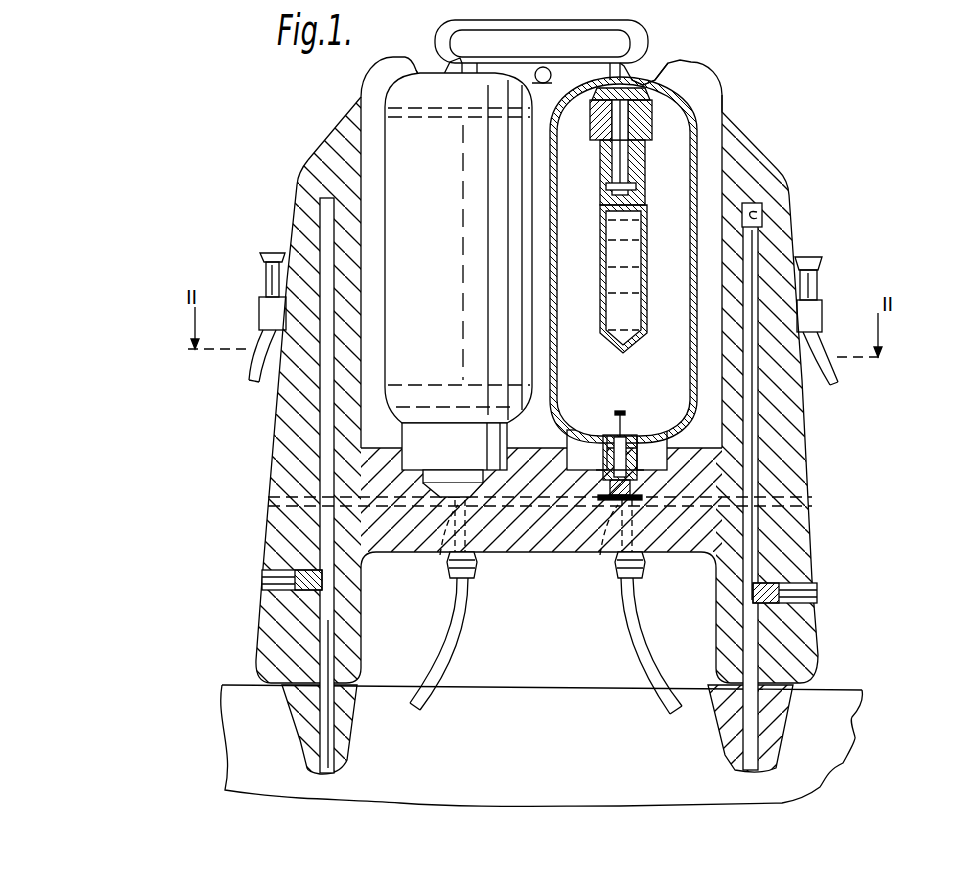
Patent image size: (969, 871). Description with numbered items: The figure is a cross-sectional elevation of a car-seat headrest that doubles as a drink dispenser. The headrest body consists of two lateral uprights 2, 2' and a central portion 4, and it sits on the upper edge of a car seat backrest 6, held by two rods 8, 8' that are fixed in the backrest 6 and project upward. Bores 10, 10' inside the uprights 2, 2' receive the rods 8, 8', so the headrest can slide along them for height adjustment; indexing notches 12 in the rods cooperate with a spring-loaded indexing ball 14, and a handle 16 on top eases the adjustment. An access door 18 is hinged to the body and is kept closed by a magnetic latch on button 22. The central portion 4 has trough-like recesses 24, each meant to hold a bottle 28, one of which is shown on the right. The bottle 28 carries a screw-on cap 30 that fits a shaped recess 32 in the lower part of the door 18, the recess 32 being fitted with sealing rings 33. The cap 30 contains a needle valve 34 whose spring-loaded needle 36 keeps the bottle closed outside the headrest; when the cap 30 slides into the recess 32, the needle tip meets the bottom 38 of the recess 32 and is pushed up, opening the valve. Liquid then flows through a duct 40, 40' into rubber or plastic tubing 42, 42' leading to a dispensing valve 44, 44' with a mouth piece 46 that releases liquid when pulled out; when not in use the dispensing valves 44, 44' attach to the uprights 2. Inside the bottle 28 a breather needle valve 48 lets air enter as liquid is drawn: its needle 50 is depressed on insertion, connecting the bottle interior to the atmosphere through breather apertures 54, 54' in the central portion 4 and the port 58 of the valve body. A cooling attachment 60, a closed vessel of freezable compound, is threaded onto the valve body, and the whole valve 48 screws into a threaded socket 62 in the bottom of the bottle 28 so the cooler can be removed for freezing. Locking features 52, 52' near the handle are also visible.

The lateral upright 2 is at (308, 390).
The lateral upright 2' is at (777, 439).
The central portion 4 is at (373, 96).
The car seat backrest 6 is at (830, 707).
The rod 8 is at (337, 729).
The rod 8' is at (760, 728).
The bore 10 is at (283, 485).
The bore 10' is at (792, 486).
The indexing notches 12 is at (803, 455).
The spring-loaded indexing ball 14 is at (780, 575).
The handle 16 is at (490, 21).
The access door 18 is at (527, 543).
The button 22 is at (546, 68).
The trough-like recess 24 is at (444, 267).
The bottle 28 is at (555, 385).
The screw-on cap 30 is at (641, 494).
The recess 32 is at (402, 418).
The sealing rings 33 is at (440, 478).
The needle valve 34 is at (656, 412).
The spring-loaded needle 36 is at (588, 460).
The bottom 38 is at (455, 487).
The duct 40 is at (439, 562).
The duct 40' is at (604, 545).
The tubing 42 is at (453, 644).
The tubing 42' is at (622, 646).
The dispensing valve 44 is at (258, 317).
The dispensing valve 44' is at (835, 336).
The mouth piece 46 is at (818, 282).
The needle valve 48 is at (592, 185).
The needle 50 is at (600, 100).
The locking notch 52 is at (406, 57).
The locking notch 52' is at (683, 59).
The breather aperture 54 is at (435, 45).
The breather aperture 54' is at (651, 45).
The port 58 is at (608, 130).
The cooling attachment 60 is at (603, 260).
The socket 62 is at (655, 125).